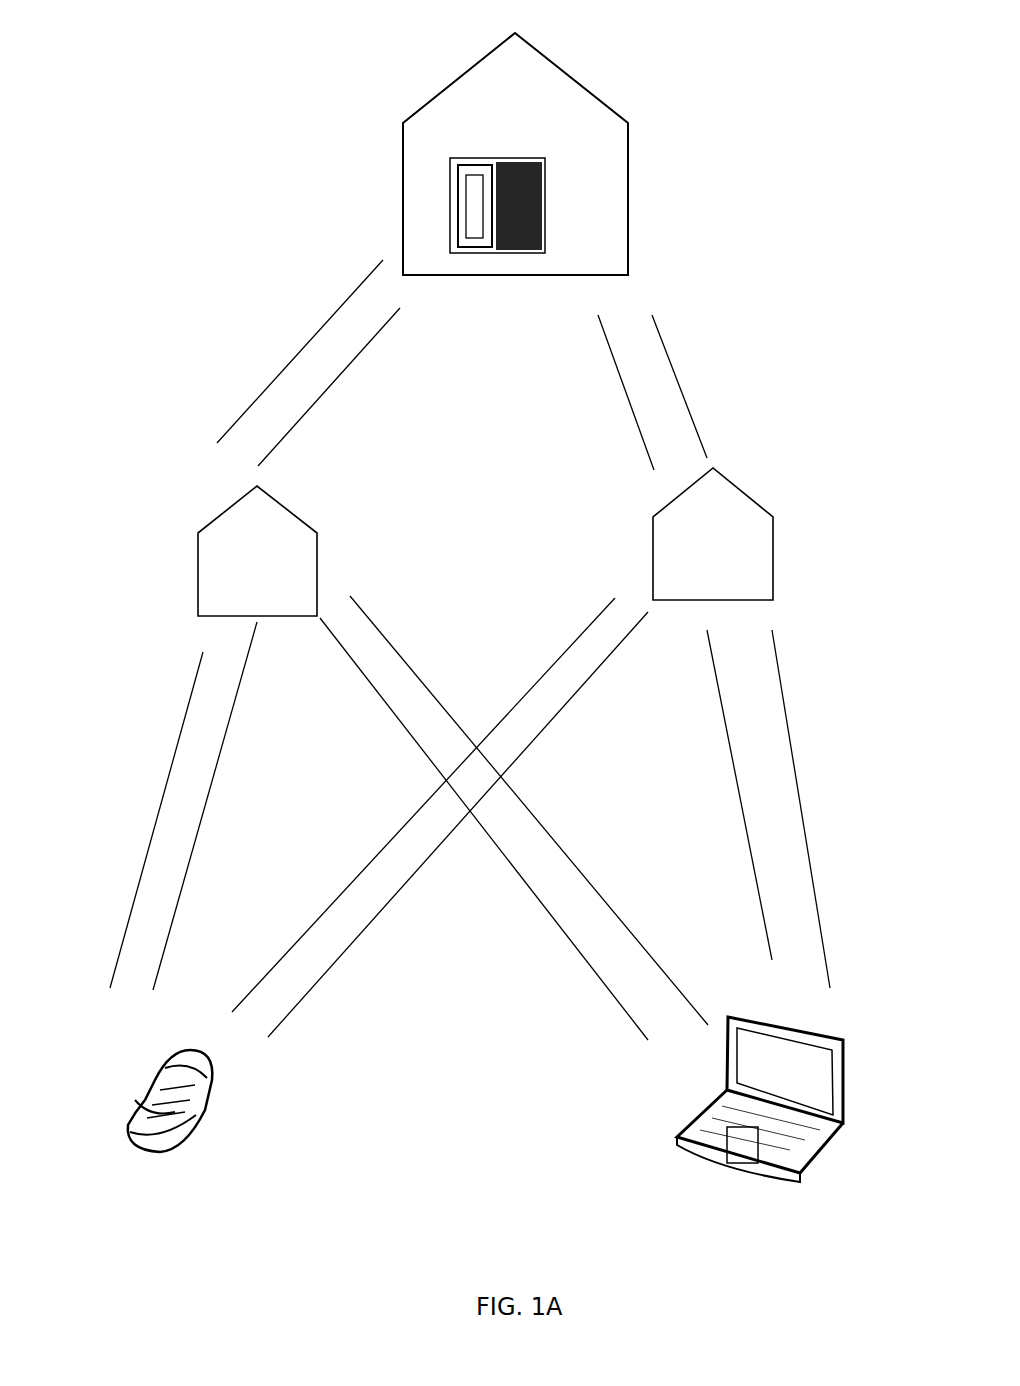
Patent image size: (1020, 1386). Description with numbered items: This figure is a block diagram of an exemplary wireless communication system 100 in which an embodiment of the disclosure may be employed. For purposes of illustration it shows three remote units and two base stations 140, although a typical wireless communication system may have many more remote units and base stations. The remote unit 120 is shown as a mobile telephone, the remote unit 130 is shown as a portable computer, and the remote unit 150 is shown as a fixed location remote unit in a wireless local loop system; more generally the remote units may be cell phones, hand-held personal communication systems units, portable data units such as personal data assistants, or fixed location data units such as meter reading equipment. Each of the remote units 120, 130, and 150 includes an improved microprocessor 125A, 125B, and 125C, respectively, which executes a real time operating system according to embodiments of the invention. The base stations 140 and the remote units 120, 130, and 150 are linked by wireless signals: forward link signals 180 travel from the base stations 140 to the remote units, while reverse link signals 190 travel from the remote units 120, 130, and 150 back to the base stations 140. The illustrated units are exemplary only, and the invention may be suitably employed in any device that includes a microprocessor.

The wireless communication system 100 is at (252, 140).
The remote unit 150 is at (497, 160).
The improved microprocessor 125B is at (522, 245).
The base station 140 is at (485, 542).
The forward link signals 180 is at (477, 642).
The reverse link signals 190 is at (462, 674).
The remote unit 120 is at (174, 1119).
The improved microprocessor 125A is at (140, 1108).
The remote unit 130 is at (760, 1099).
The improved microprocessor 125C is at (742, 1145).